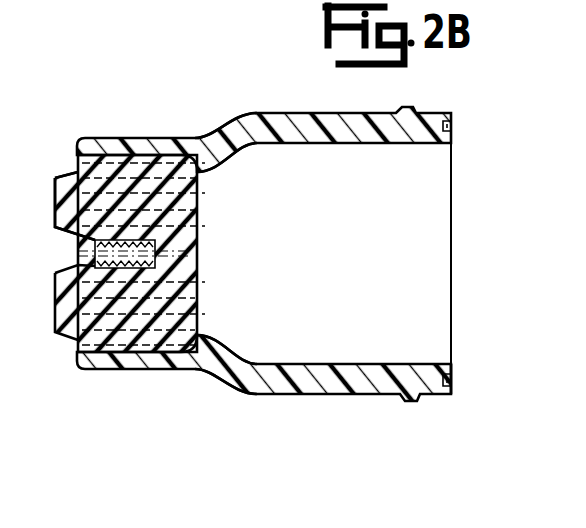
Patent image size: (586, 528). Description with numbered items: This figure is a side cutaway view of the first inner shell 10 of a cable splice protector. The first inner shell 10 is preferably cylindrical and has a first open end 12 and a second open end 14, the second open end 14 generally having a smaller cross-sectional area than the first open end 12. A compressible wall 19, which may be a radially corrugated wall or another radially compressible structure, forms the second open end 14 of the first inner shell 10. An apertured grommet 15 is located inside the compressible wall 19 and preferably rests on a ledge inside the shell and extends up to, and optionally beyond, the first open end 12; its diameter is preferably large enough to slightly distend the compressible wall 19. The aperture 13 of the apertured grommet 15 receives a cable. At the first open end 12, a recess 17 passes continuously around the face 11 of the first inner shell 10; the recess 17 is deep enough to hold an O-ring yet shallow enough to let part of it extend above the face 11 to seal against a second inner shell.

The first inner shell 10 is at (360, 397).
The face 11 is at (455, 392).
The first open end 12 is at (438, 158).
The aperture 13 is at (197, 255).
The second open end 14 is at (62, 246).
The apertured grommet 15 is at (197, 208).
The recess 17 is at (447, 128).
The compressible wall 19 is at (63, 202).